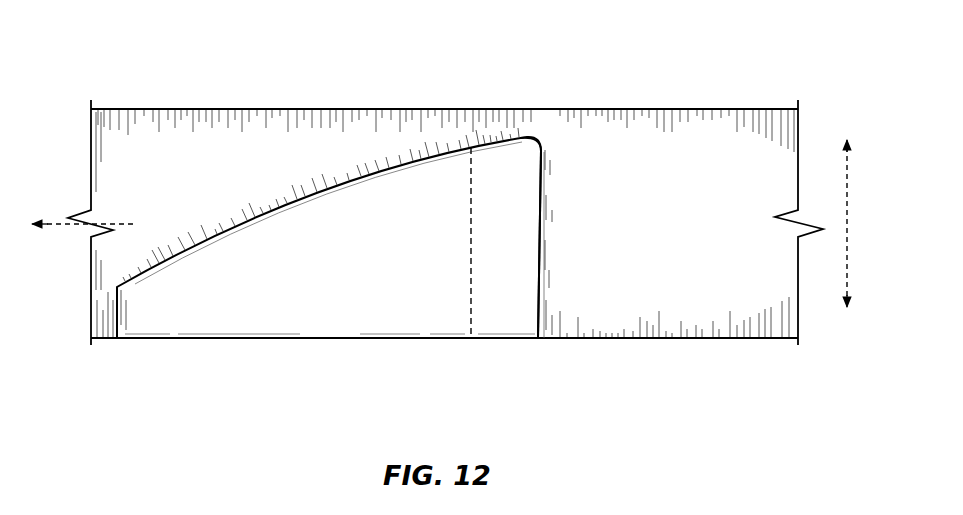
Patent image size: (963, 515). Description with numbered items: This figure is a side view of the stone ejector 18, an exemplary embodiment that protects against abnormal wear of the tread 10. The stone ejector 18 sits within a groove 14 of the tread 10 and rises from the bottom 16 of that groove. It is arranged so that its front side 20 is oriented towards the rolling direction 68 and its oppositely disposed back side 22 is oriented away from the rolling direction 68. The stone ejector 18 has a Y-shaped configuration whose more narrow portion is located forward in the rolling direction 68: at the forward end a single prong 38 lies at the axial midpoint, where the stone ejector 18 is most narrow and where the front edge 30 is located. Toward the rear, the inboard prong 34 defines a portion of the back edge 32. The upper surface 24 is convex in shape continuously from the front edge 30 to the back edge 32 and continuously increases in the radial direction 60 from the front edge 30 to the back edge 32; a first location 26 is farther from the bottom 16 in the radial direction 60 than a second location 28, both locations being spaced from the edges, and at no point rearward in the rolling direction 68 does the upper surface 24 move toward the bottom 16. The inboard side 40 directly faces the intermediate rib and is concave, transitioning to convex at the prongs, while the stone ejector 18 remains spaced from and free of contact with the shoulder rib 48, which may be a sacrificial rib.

The tread 10 is at (803, 56).
The groove 14 is at (722, 194).
The bottom 16 is at (689, 332).
The stone ejector 18 is at (212, 322).
The front side 20 is at (112, 313).
The back side 22 is at (547, 224).
The upper surface 24 is at (261, 202).
The first location 26 is at (440, 152).
The second location 28 is at (340, 186).
The front edge 30 is at (117, 287).
The back edge 32 is at (532, 134).
The inboard prong 34 is at (526, 180).
The single prong 38 is at (263, 322).
The inboard side 40 is at (446, 316).
The shoulder rib 48 is at (182, 128).
The radial direction 60 is at (850, 225).
The rolling direction 68 is at (56, 222).